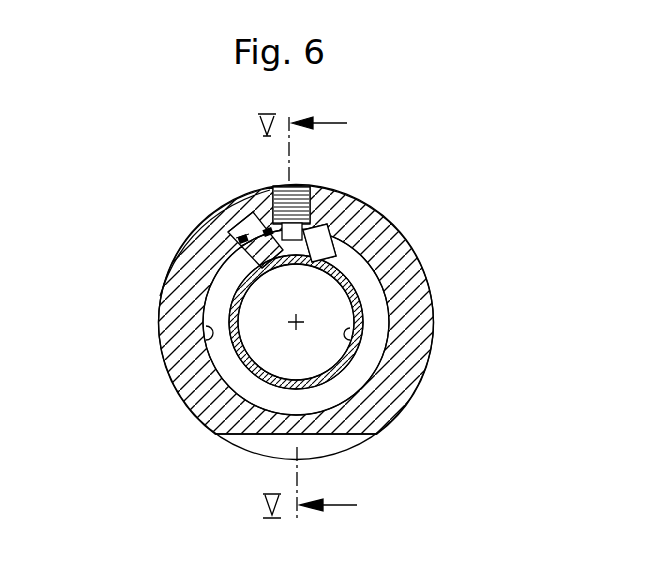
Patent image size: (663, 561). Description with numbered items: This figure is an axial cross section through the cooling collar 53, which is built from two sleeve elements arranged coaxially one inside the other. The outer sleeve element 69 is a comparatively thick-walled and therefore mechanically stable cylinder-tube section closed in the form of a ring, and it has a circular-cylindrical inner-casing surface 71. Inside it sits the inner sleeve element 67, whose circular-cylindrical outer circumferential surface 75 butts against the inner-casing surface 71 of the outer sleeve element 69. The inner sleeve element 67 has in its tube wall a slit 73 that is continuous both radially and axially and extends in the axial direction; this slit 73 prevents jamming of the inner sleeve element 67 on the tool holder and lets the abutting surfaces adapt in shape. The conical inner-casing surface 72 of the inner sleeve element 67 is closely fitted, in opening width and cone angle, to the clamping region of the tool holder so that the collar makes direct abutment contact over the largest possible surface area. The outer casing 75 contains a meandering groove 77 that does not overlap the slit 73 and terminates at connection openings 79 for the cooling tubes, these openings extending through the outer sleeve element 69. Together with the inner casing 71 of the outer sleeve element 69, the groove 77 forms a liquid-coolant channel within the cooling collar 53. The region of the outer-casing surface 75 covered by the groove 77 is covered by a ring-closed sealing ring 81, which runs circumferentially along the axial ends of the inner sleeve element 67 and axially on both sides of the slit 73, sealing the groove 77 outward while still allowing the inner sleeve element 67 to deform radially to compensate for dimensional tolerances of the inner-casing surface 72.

The cooling collar 53 is at (412, 212).
The inner sleeve element 67 is at (337, 370).
The outer sleeve element 69 is at (206, 412).
The inner-casing surface 71 is at (207, 349).
The inner-casing surface 72 is at (356, 341).
The slit 73 is at (273, 268).
The outer circumferential surface 75 is at (197, 292).
The meandering groove 77 is at (372, 290).
The connection openings 79 is at (312, 186).
The sealing ring 81 is at (268, 229).